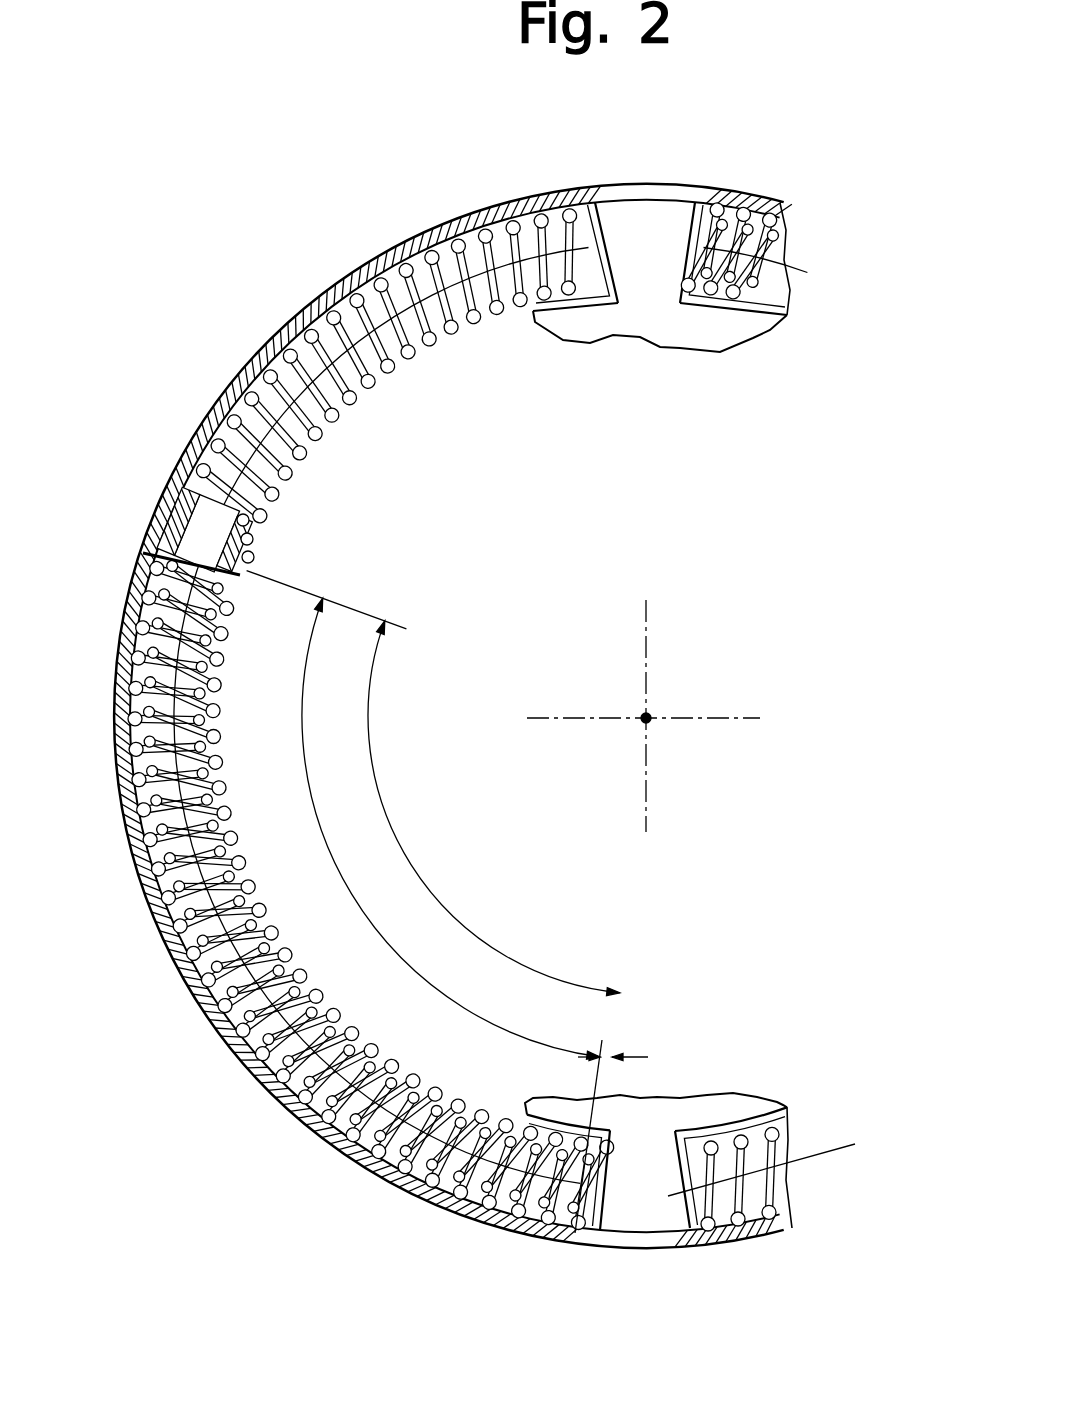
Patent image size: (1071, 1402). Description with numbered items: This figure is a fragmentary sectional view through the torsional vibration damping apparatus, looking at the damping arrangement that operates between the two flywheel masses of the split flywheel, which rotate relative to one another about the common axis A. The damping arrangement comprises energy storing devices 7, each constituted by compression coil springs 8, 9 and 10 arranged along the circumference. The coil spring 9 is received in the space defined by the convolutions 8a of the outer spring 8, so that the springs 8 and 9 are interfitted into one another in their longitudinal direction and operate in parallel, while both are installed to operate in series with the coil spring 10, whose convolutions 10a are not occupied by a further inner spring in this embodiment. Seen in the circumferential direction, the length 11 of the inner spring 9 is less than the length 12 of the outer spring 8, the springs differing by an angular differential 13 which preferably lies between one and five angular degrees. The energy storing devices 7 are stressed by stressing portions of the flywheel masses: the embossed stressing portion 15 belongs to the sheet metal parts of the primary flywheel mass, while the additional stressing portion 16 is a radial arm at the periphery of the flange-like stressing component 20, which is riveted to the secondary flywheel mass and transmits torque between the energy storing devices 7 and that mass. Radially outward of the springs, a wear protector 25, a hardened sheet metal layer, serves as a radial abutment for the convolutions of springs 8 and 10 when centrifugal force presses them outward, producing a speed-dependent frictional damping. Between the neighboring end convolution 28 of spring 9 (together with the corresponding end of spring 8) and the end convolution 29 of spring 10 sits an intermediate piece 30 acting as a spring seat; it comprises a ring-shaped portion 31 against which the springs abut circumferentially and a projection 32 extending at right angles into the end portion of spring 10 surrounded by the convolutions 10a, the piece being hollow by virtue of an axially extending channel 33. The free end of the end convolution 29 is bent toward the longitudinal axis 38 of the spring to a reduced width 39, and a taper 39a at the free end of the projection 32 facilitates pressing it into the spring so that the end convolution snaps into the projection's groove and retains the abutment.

The energy storing device 7 is at (777, 185).
The outer coil spring 8 is at (262, 930).
The convolutions of spring 8 8a is at (240, 866).
The inner coil spring 9 is at (290, 972).
The coil spring 10 is at (470, 330).
The convolutions of spring 10 10a is at (272, 342).
The length of inner coil spring 11 is at (453, 1000).
The length of outer coil spring 12 is at (398, 838).
The angular differential 13 is at (610, 1056).
The stressing portion 15 is at (712, 222).
The additional stressing portion 16 is at (665, 205).
The flange-like stressing component 20 is at (680, 322).
The wear protector 25 is at (372, 262).
The end convolution of spring 9 28 is at (175, 555).
The end convolution of spring 10 29 is at (254, 557).
The intermediate piece 30 is at (240, 545).
The ring-shaped portion 31 is at (234, 578).
The projection 32 is at (167, 493).
The axially extending channel 33 is at (237, 512).
The longitudinal axis of the spring 38 is at (510, 262).
The reduced width 39 is at (590, 290).
The taper 39a is at (622, 978).
The common axis A is at (650, 714).